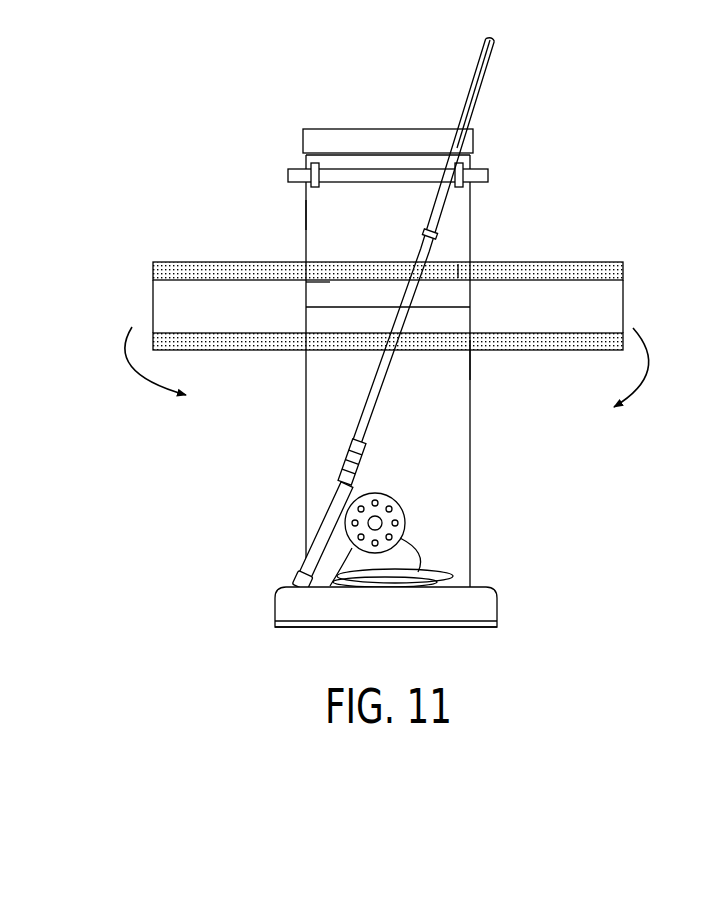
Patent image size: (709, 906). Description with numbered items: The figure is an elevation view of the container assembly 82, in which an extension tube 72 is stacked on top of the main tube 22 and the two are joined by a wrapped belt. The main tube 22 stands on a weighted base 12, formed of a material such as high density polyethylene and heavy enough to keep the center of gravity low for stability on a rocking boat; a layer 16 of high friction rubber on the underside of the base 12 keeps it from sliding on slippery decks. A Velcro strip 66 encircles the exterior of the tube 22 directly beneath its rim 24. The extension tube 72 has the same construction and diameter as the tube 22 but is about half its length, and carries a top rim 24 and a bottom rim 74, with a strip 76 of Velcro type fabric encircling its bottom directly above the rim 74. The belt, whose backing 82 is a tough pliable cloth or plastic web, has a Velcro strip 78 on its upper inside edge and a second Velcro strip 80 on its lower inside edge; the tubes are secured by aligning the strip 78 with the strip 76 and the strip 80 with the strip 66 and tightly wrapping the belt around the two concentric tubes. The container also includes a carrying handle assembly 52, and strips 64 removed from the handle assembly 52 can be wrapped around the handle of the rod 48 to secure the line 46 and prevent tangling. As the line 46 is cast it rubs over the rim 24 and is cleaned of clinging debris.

The base 12 is at (488, 600).
The layer of high friction material 16 is at (284, 628).
The tube 22 is at (470, 468).
The rim 24 is at (330, 320).
The line 46 is at (372, 420).
The rod 48 is at (422, 252).
The carrying handle assembly 52 is at (400, 158).
The strips 64 is at (345, 470).
The Velcro strip 66 is at (468, 345).
The extension tube 72 is at (306, 213).
The bottom rim 74 is at (322, 290).
The strip of Velcro type fabric 76 is at (458, 274).
The Velcro type fabric strip 78 is at (610, 262).
The second Velcro type fabric strip 80 is at (607, 338).
The container assembly 82 is at (597, 191).